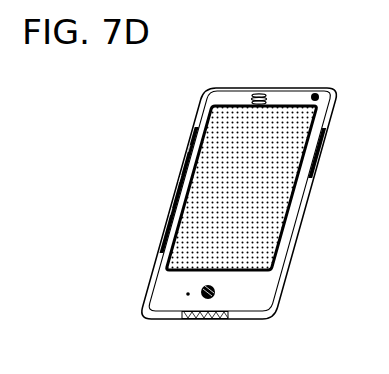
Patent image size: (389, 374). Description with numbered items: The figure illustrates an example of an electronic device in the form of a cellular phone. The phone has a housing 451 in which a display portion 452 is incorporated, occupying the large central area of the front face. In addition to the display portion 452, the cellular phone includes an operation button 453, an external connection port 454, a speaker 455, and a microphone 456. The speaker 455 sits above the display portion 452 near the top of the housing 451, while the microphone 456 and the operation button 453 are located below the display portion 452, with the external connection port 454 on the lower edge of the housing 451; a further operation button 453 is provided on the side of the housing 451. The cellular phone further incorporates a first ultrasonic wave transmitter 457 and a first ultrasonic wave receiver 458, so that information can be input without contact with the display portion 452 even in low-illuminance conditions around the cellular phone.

The housing 451 is at (156, 305).
The display portion 452 is at (230, 128).
The operation button 453 is at (320, 147).
The external connection port 454 is at (200, 324).
The speaker 455 is at (259, 93).
The microphone 456 is at (187, 293).
The first ultrasonic wave transmitter 457 is at (317, 93).
The first ultrasonic wave receiver 458 is at (177, 187).